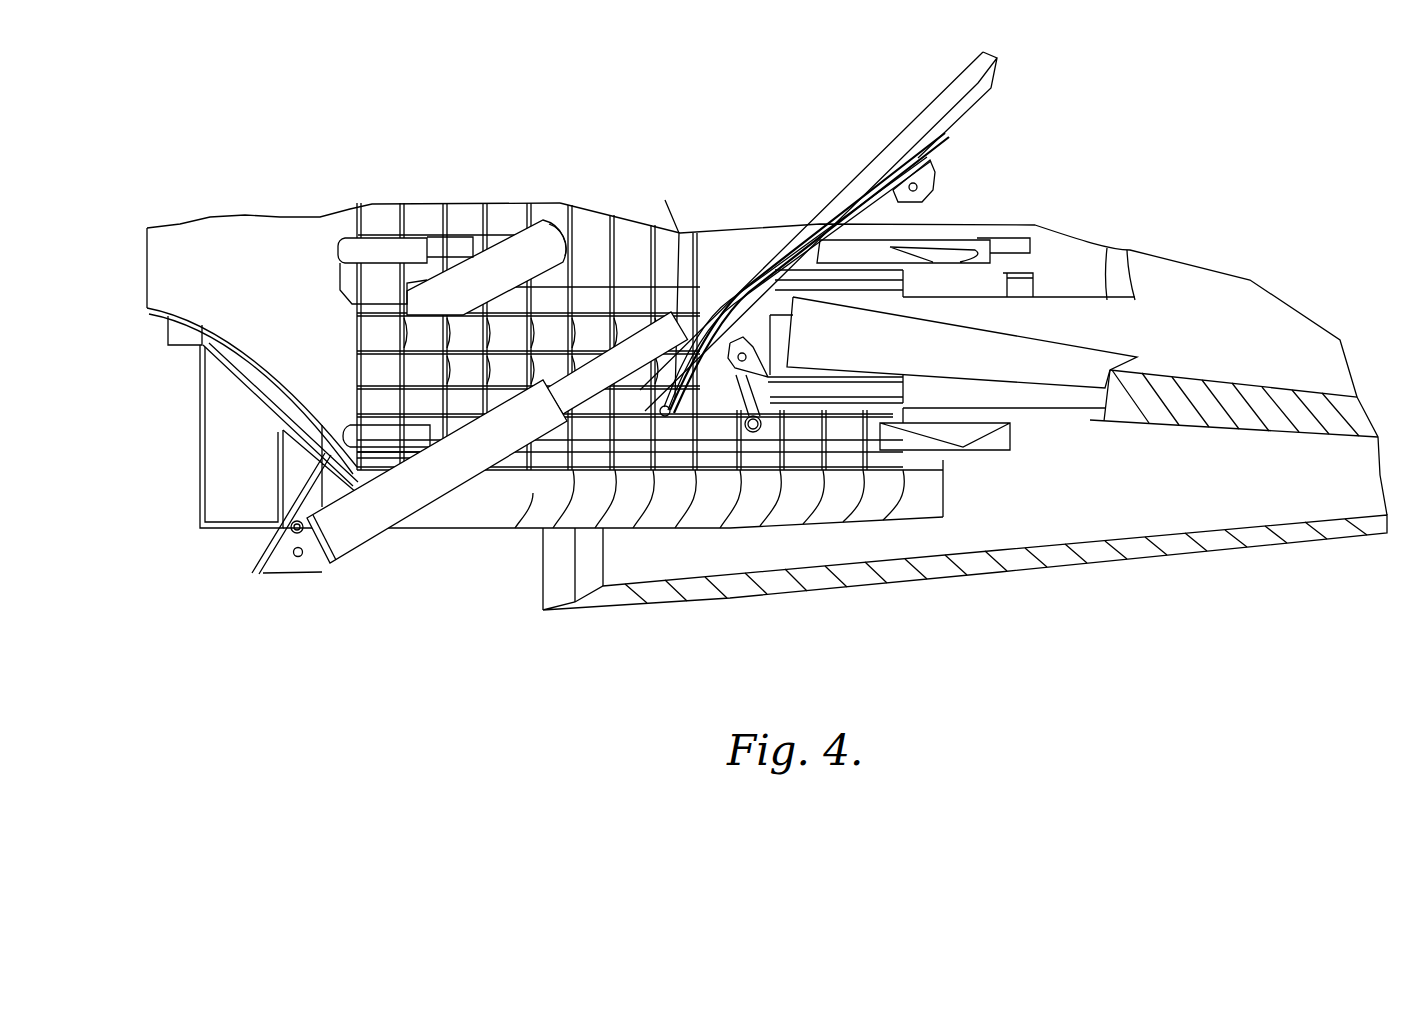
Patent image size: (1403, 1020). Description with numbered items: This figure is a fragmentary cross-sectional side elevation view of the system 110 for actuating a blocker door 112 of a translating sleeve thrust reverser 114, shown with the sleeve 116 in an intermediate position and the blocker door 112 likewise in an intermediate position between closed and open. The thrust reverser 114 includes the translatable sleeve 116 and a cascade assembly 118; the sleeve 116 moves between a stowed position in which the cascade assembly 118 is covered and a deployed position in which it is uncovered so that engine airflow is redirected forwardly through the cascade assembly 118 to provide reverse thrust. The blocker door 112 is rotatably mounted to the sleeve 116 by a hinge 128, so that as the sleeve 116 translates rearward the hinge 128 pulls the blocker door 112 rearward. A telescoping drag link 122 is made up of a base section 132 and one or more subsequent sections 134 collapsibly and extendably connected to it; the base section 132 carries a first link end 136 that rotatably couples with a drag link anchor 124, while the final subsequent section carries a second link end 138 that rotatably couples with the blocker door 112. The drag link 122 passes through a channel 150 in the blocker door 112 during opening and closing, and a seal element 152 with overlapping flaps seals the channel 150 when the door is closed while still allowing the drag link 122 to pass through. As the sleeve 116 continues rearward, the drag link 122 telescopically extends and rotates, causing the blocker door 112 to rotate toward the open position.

The system 110 is at (338, 586).
The blocker door 112 is at (940, 77).
The translating sleeve thrust reverser 114 is at (124, 248).
The sleeve 116 is at (1263, 328).
The cascade assembly 118 is at (740, 538).
The drag link 122 is at (404, 538).
The drag link anchor 124 is at (285, 570).
The hinge 128 is at (765, 350).
The base section 132 is at (443, 480).
The subsequent sections 134 is at (707, 307).
The first link end 136 is at (339, 538).
The second link end 138 is at (884, 207).
The channel 150 is at (855, 165).
The seal element 152 is at (838, 211).